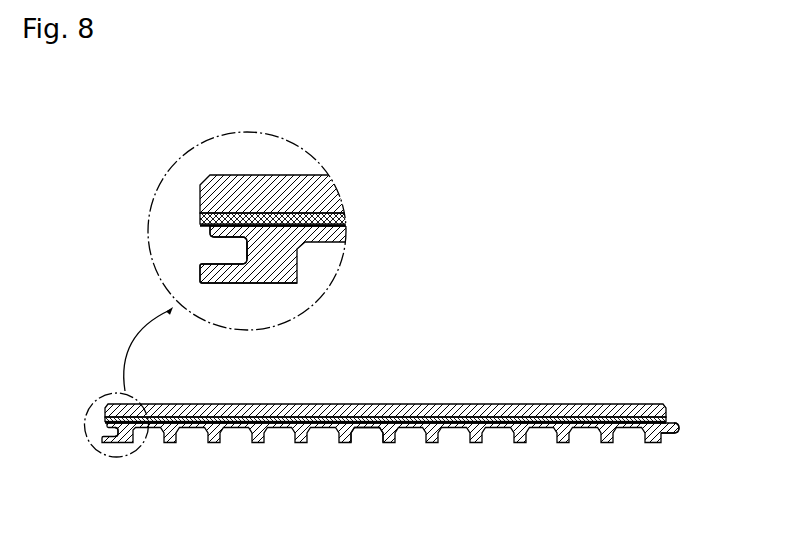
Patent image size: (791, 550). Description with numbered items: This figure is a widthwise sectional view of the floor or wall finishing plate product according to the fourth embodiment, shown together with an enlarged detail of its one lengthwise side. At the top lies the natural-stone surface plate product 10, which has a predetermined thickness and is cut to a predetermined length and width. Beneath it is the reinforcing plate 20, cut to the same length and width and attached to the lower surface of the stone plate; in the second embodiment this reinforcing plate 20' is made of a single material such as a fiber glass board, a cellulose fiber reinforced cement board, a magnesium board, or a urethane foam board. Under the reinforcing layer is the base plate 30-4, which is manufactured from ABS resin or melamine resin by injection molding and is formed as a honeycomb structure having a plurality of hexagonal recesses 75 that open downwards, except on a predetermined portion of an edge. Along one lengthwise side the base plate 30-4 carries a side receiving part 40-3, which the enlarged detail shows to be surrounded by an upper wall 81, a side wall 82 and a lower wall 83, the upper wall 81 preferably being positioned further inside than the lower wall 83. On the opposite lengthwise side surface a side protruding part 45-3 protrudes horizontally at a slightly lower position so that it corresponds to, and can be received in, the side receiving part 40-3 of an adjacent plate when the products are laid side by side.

The natural-stone surface plate product 10 is at (485, 400).
The reinforcing plate 20 is at (359, 400).
The reinforcing plate 20' is at (285, 178).
The base plate 30-4 is at (120, 450).
The side receiving part 40-3 is at (113, 433).
The side protruding part 45-3 is at (680, 428).
The hexagonal recesses 75 is at (396, 436).
The upper wall 81 is at (212, 232).
The side wall 82 is at (245, 248).
The lower wall 83 is at (199, 273).